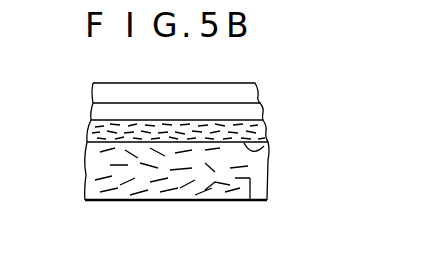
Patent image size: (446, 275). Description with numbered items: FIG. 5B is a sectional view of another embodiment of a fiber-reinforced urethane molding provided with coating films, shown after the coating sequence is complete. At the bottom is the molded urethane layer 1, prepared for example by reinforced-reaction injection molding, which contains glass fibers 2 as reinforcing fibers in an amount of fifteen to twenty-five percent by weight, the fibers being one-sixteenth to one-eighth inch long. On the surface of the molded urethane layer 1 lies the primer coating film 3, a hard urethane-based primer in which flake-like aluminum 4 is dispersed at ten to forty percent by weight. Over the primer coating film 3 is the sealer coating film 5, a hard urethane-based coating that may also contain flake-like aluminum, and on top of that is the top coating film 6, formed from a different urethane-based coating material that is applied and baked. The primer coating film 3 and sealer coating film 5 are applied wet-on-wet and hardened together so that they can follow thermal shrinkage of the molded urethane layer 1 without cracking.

The molded urethane layer 1 is at (275, 170).
The glass fibers 2 is at (222, 200).
The primer coating film 3 is at (268, 120).
The flake-like aluminum 4 is at (266, 145).
The sealer coating film 5 is at (260, 108).
The top coating film 6 is at (258, 83).